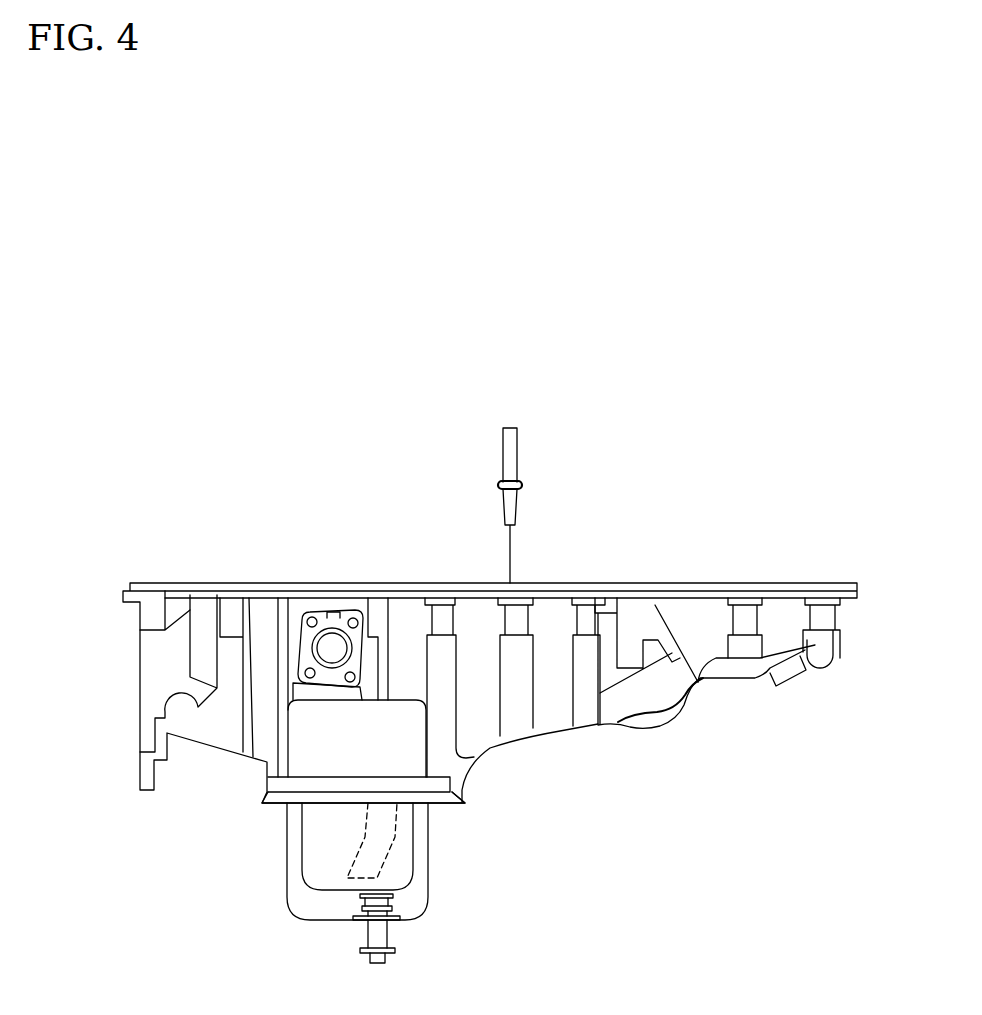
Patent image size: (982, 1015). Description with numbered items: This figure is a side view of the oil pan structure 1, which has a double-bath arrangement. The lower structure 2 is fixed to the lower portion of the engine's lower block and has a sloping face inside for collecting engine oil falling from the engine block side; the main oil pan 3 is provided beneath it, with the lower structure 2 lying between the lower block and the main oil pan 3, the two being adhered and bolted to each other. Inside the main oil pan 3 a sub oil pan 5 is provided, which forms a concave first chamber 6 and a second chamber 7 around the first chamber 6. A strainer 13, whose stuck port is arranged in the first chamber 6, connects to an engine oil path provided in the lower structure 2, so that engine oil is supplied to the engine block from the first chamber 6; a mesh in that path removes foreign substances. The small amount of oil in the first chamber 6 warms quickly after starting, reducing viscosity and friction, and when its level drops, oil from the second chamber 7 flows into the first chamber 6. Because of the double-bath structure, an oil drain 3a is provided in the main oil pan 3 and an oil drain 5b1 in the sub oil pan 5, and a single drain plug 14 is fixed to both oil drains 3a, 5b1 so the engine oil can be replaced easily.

The oil pan structure 1 is at (658, 860).
The lower structure 2 is at (548, 735).
The main oil pan 3 is at (425, 910).
The oil drain 3a is at (392, 922).
The sub oil pan 5 is at (415, 863).
The oil drain 5b1 is at (358, 895).
The first chamber 6 is at (315, 843).
The second chamber 7 is at (303, 903).
The strainer 13 is at (402, 820).
The drain plug 14 is at (368, 957).